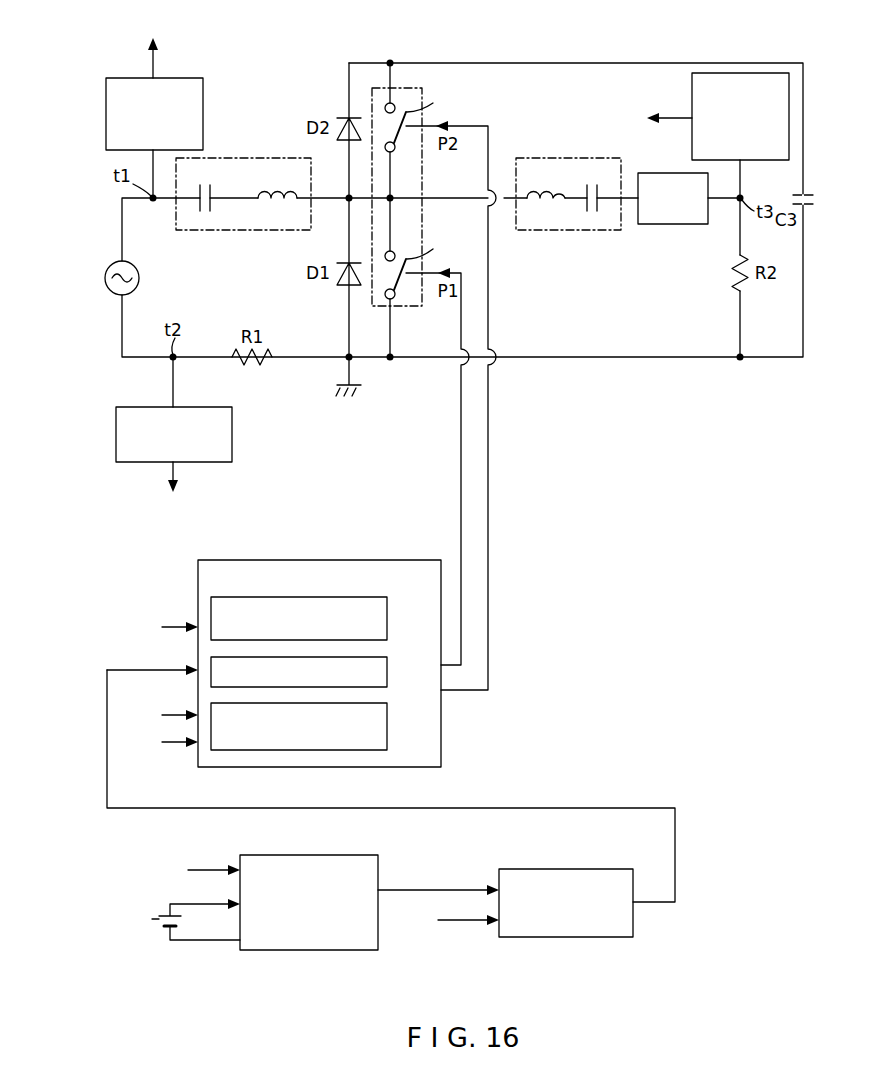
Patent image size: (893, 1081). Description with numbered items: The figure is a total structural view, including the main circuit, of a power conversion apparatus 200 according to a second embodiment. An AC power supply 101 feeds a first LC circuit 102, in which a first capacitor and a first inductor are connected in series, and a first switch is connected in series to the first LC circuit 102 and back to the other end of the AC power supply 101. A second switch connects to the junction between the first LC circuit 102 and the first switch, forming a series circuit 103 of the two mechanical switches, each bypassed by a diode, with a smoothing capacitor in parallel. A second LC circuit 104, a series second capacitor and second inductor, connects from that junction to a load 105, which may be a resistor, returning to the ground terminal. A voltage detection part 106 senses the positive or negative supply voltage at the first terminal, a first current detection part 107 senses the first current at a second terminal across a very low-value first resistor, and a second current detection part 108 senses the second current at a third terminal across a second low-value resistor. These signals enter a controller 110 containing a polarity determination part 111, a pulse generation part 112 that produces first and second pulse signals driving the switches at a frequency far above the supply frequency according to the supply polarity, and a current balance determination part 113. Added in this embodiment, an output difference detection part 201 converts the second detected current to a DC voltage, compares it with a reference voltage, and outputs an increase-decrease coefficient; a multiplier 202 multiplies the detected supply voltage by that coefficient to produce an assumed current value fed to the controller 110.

The power conversion apparatus 200 is at (270, 62).
The AC power supply 101 is at (135, 268).
The first LC circuit 102 is at (243, 158).
The series circuit 103 is at (422, 177).
The second LC circuit 104 is at (567, 158).
The load 105 is at (676, 226).
The voltage detection part 106 is at (187, 78).
The first current detection part 107 is at (201, 407).
The second current detection part 108 is at (770, 162).
The controller 110 is at (297, 560).
The polarity determination part 111 is at (387, 620).
The pulse generation part 112 is at (387, 672).
The current balance determination part 113 is at (387, 722).
The output difference detection part 201 is at (309, 951).
The multiplier 202 is at (565, 938).